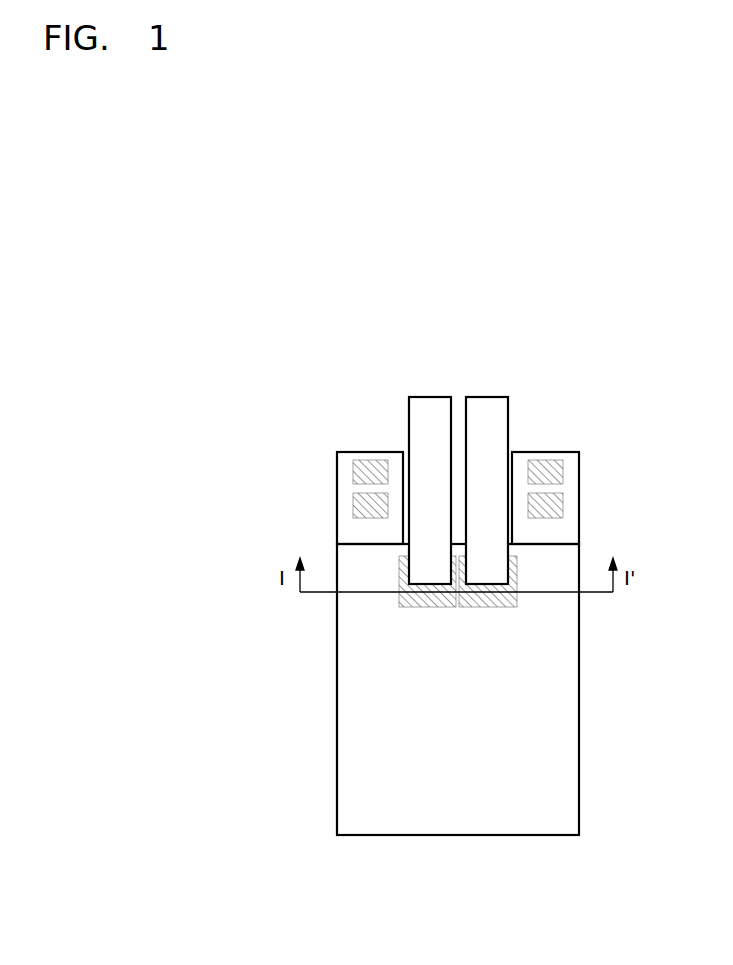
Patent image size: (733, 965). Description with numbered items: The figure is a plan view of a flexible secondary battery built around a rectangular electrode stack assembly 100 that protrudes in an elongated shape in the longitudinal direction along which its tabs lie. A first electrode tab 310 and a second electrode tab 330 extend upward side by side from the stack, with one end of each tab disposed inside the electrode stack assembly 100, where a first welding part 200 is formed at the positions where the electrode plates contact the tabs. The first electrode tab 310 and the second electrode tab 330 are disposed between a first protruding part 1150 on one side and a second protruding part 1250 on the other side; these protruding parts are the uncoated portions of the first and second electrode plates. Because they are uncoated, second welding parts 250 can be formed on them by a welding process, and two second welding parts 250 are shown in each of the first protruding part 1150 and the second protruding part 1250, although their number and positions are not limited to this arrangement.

The electrode stack assembly 100 is at (567, 670).
The first welding part 200 is at (493, 597).
The second welding parts 250 is at (368, 505).
The first electrode tab 310 is at (427, 390).
The second electrode tab 330 is at (488, 390).
The first protruding part 1150 is at (352, 531).
The second protruding part 1250 is at (565, 532).